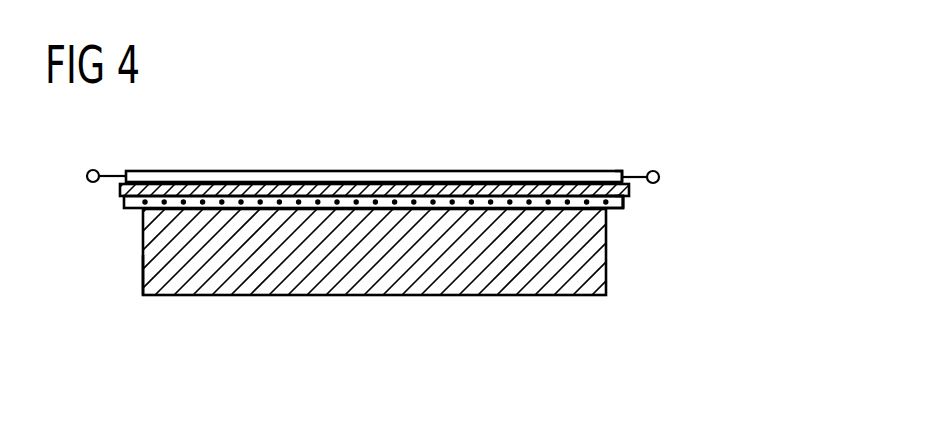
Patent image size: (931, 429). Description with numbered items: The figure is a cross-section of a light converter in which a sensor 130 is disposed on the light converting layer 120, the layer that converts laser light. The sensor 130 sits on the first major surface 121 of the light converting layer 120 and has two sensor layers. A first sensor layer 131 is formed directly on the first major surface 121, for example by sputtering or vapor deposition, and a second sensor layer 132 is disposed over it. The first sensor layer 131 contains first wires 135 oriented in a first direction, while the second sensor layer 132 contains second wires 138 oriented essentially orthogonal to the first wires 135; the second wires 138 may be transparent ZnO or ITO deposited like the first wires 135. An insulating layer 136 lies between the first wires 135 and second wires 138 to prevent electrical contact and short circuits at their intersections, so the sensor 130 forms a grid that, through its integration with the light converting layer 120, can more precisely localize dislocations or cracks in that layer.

The light converting layer 120 is at (596, 248).
The first major surface 121 is at (143, 281).
The first sensor layer 131 is at (126, 209).
The second sensor layer 132 is at (373, 177).
The first wires 135 is at (604, 204).
The insulating layer 136 is at (121, 190).
The second wires 138 is at (637, 171).
The sensor 130 is at (680, 172).